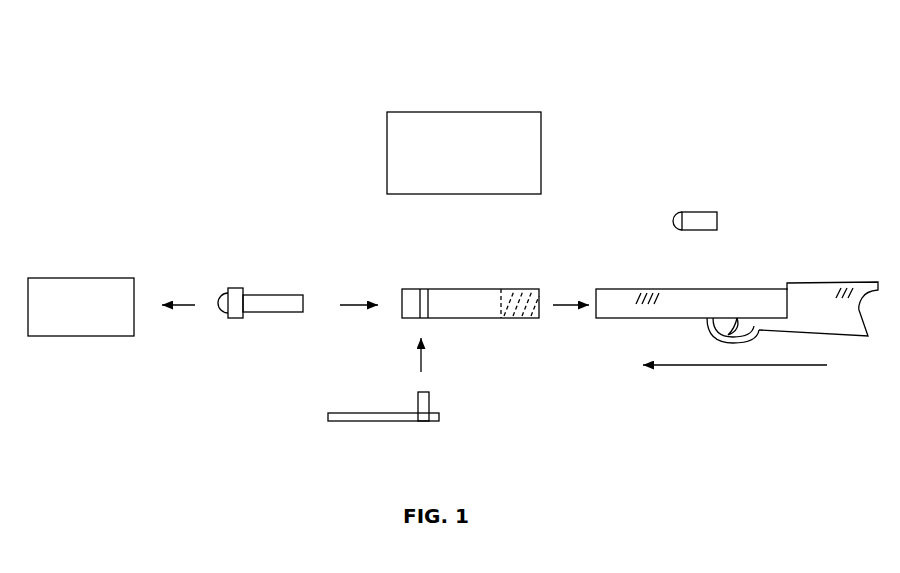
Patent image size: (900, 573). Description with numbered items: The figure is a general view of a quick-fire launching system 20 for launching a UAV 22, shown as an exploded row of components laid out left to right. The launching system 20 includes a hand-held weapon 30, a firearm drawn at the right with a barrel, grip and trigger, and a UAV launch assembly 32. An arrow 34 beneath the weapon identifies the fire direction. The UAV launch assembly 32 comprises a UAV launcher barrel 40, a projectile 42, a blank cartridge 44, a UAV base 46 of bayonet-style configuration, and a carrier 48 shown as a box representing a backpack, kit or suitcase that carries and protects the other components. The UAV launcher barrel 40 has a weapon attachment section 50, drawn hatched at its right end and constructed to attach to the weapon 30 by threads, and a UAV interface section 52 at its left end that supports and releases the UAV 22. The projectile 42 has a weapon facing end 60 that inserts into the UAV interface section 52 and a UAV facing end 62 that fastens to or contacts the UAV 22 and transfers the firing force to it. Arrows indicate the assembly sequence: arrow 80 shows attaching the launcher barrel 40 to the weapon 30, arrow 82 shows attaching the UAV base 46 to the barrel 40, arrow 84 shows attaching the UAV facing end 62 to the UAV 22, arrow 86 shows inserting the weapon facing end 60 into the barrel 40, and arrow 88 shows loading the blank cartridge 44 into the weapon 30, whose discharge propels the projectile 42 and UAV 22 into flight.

The quick-fire launching system 20 is at (703, 50).
The UAV 22 is at (81, 307).
The hand-held weapon 30 is at (801, 263).
The UAV launch assembly 32 is at (610, 131).
The arrow 34 is at (714, 366).
The UAV launcher barrel 40 is at (468, 272).
The projectile 42 is at (262, 275).
The blank cartridge 44 is at (700, 218).
The UAV base 46 is at (388, 419).
The carrier 48 is at (464, 153).
The weapon attachment section 50 is at (528, 290).
The UAV interface section 52 is at (407, 290).
The weapon facing end 60 is at (300, 296).
The UAV facing end 62 is at (222, 300).
The arrow 80 is at (570, 306).
The arrow 82 is at (422, 362).
The arrow 84 is at (172, 306).
The arrow 86 is at (352, 306).
The arrow 88 is at (746, 270).